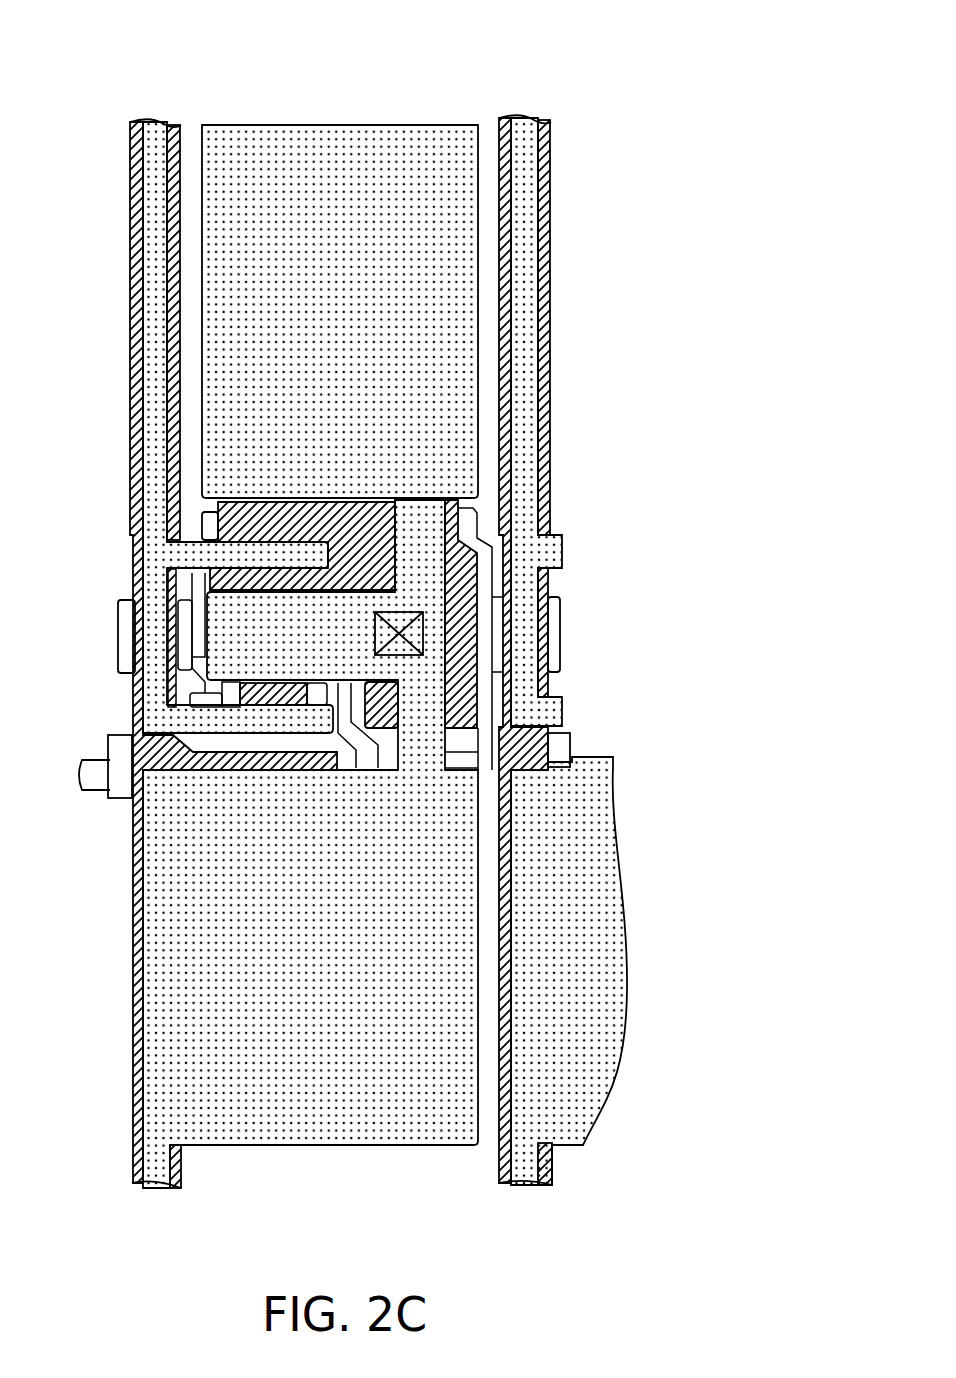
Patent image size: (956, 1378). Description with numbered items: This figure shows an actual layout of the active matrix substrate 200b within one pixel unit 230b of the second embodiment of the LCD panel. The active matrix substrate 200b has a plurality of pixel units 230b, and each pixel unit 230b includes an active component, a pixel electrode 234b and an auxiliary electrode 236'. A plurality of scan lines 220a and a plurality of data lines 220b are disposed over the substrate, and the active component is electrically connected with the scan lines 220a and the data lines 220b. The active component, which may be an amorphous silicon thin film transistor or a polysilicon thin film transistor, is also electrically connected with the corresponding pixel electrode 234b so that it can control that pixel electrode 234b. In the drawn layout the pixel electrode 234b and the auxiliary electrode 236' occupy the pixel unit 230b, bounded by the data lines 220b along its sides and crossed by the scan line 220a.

The pixel unit 230b is at (528, 84).
The pixel electrode 234b is at (440, 305).
The auxiliary electrode 236' is at (188, 427).
The data line 220b is at (135, 1183).
The scan line 220a is at (590, 757).
The active matrix substrate 200b is at (667, 1250).